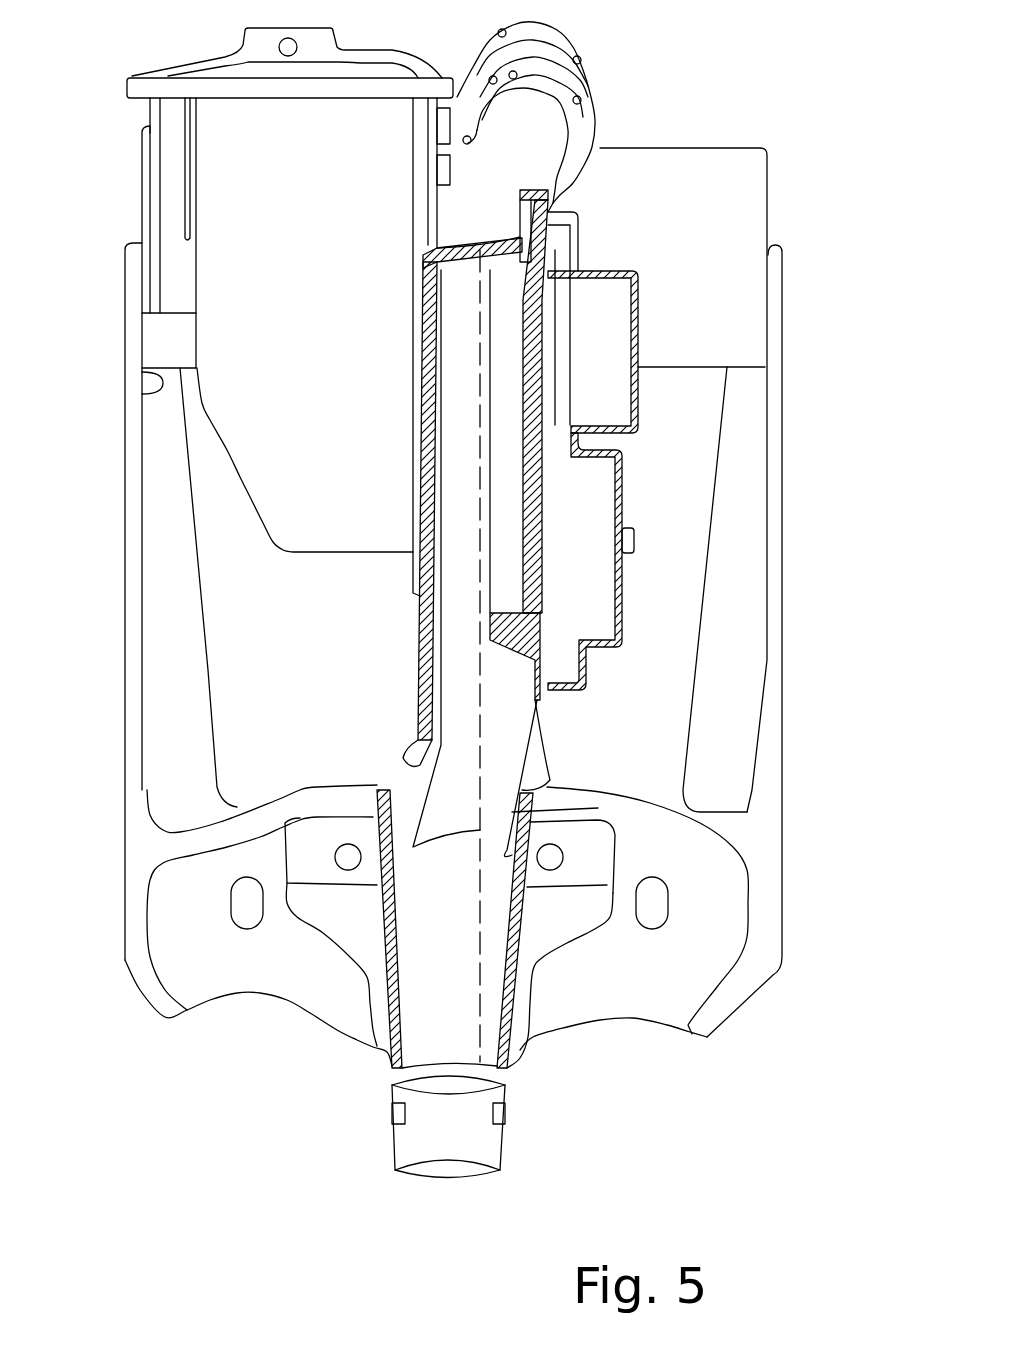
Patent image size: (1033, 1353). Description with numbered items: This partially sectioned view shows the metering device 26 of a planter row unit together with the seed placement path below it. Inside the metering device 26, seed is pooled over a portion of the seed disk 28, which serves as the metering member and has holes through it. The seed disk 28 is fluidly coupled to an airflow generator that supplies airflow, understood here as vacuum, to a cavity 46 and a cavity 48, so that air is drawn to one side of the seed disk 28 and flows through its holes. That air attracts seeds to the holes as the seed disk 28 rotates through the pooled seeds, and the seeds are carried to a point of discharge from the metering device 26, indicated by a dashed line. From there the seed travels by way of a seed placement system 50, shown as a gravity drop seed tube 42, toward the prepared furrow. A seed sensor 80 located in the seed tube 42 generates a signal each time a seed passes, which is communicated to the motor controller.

The metering device 26 is at (721, 102).
The seed disk 28 is at (532, 557).
The gravity drop seed tube 42 is at (395, 1145).
The cavity 46 is at (548, 328).
The cavity 48 is at (576, 515).
The seed placement system 50 is at (165, 1082).
The seed sensor 80 is at (392, 1108).